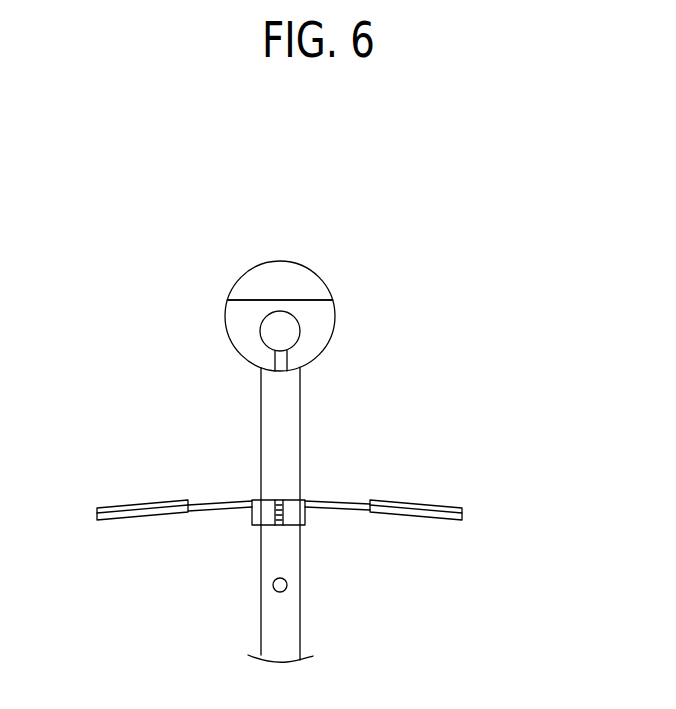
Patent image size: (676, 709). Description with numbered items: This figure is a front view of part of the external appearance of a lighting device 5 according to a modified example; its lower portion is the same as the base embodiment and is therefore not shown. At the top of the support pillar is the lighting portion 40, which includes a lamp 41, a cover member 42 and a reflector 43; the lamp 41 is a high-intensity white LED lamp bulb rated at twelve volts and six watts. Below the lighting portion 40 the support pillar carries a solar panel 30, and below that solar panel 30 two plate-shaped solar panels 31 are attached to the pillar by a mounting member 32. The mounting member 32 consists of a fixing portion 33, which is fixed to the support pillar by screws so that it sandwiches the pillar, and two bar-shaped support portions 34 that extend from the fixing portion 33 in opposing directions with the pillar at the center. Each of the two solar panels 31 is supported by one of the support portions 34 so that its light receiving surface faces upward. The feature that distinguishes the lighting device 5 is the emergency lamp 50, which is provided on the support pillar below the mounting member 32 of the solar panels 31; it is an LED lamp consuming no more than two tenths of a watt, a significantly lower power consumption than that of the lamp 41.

The lighting device 5 is at (395, 247).
The solar panel 30 is at (288, 423).
The solar panel 31 is at (127, 503).
The mounting member 32 is at (320, 488).
The fixing portion 33 is at (263, 517).
The support portion 34 is at (232, 508).
The lighting portion 40 is at (217, 270).
The lamp 41 is at (287, 329).
The cover member 42 is at (242, 330).
The reflector 43 is at (293, 278).
The emergency lamp 50 is at (288, 583).